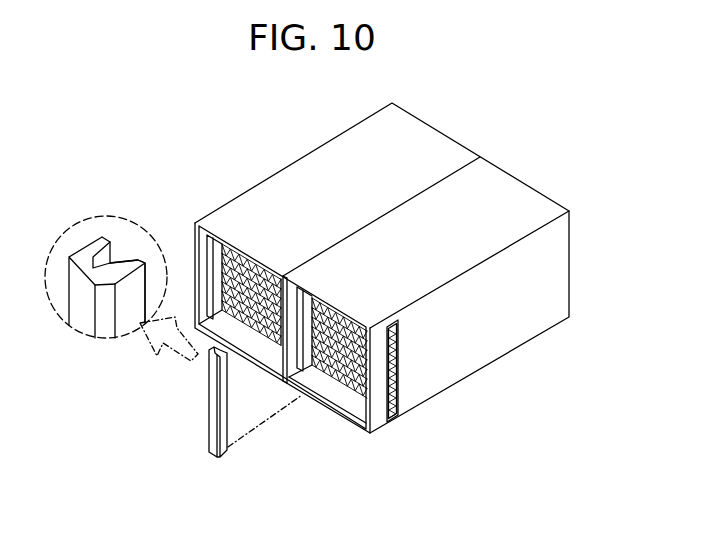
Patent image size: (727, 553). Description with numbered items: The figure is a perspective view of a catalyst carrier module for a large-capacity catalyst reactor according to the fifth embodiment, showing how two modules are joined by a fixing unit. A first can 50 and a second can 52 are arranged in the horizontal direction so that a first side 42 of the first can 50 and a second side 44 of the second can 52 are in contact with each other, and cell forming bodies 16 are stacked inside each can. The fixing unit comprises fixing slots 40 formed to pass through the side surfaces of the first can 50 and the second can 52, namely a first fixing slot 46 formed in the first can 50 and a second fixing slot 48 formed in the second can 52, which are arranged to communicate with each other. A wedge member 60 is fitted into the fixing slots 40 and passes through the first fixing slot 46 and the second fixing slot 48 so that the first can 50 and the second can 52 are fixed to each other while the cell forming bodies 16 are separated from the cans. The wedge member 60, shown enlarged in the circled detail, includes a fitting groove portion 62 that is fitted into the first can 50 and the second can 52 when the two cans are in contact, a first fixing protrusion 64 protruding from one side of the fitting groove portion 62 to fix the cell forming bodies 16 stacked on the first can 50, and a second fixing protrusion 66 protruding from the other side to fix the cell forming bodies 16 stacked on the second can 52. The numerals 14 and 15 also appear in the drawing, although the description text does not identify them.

The heat exchanger 14 is at (346, 385).
The heat exchanger fin 15 is at (325, 378).
The cell forming bodies 16 is at (291, 428).
The fixing slots 40 is at (393, 423).
The first side 42 is at (285, 366).
The second side 44 is at (281, 345).
The first fixing slot 46 is at (333, 290).
The second fixing slot 48 is at (310, 292).
The first can 50 is at (513, 192).
The second can 52 is at (438, 142).
The wedge member 60 is at (121, 219).
The fitting groove portion 62 is at (112, 250).
The first fixing protrusion 64 is at (140, 264).
The second fixing protrusion 66 is at (108, 260).